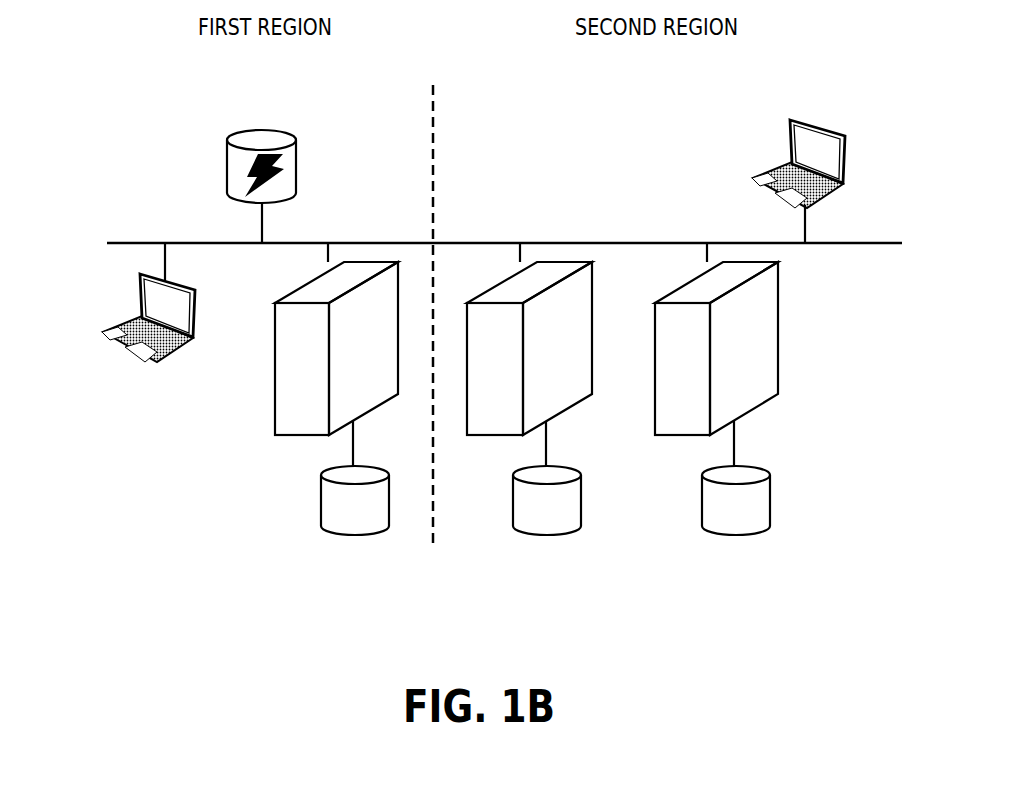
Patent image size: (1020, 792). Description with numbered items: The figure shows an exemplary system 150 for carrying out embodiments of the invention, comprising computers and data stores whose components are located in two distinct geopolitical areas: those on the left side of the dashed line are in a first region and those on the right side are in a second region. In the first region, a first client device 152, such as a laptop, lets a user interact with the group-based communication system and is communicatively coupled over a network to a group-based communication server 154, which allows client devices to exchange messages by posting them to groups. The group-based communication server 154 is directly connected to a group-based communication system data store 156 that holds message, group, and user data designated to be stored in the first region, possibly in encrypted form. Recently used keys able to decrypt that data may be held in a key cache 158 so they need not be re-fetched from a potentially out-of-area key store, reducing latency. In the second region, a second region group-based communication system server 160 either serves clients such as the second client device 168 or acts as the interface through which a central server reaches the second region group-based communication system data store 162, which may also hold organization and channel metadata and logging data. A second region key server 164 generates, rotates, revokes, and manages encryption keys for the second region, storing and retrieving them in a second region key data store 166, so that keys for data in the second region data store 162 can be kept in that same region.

The system 150 is at (84, 246).
The first client device 152 is at (158, 360).
The group-based communication server 154 is at (300, 435).
The group-based communication system data store 156 is at (352, 537).
The key cache 158 is at (273, 132).
The second region group-based communication system server 160 is at (494, 435).
The second region group-based communication system data store 162 is at (540, 537).
The second region key server 164 is at (682, 435).
The second region key data store 166 is at (730, 537).
The second client device 168 is at (820, 128).